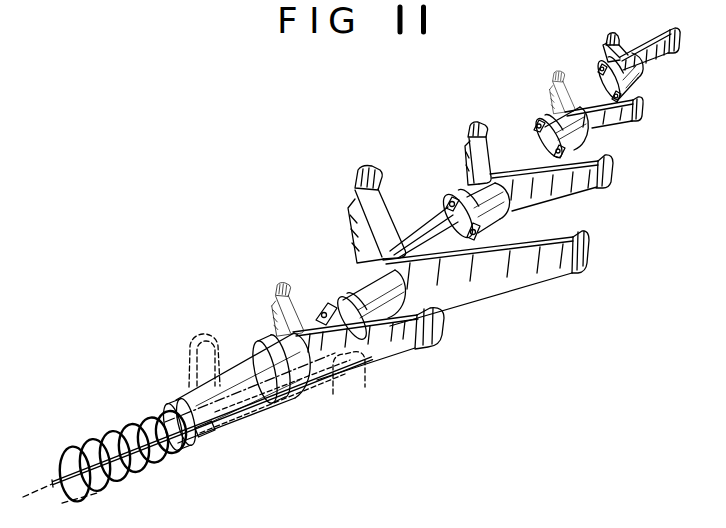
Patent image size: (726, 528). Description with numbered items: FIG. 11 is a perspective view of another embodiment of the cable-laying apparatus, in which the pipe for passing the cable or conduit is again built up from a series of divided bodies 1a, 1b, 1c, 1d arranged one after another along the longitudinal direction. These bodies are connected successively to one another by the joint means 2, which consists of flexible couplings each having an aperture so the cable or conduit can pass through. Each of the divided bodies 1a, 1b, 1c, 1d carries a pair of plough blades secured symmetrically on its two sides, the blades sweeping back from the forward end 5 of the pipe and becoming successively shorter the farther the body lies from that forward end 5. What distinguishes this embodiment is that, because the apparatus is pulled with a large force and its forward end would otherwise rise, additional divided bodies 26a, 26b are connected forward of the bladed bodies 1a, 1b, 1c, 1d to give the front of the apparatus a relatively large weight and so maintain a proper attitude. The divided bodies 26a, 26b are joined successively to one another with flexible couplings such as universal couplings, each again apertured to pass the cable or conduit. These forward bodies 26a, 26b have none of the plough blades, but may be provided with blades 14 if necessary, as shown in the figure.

The divided body 1a is at (347, 297).
The divided body 1b is at (468, 196).
The divided body 1c is at (556, 120).
The divided body 1d is at (604, 68).
The joint means 2 is at (256, 362).
The forward end 5 is at (170, 409).
The blades 14 is at (192, 352).
The divided body 26a is at (221, 434).
The divided body 26b is at (270, 345).